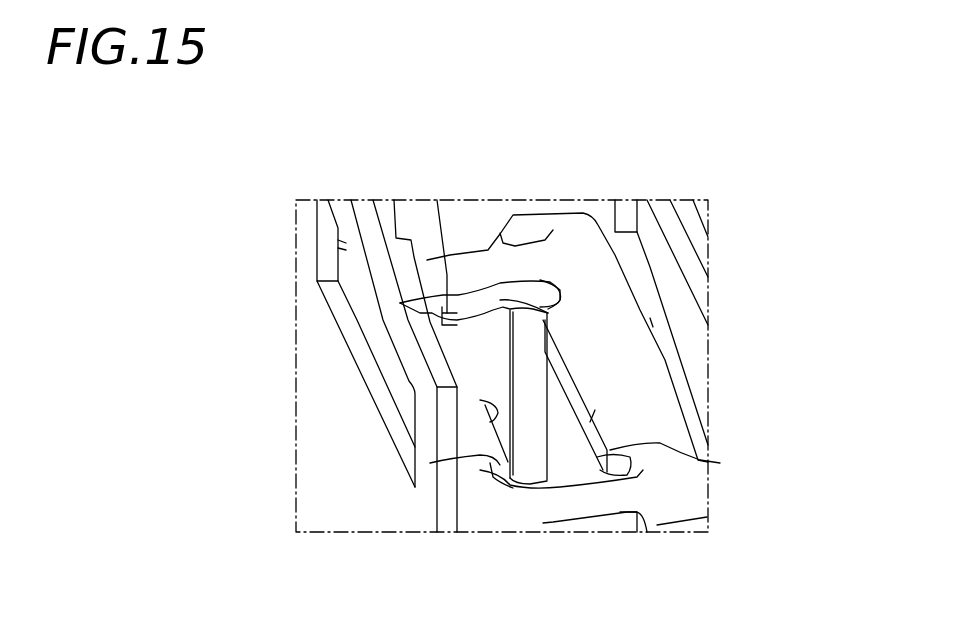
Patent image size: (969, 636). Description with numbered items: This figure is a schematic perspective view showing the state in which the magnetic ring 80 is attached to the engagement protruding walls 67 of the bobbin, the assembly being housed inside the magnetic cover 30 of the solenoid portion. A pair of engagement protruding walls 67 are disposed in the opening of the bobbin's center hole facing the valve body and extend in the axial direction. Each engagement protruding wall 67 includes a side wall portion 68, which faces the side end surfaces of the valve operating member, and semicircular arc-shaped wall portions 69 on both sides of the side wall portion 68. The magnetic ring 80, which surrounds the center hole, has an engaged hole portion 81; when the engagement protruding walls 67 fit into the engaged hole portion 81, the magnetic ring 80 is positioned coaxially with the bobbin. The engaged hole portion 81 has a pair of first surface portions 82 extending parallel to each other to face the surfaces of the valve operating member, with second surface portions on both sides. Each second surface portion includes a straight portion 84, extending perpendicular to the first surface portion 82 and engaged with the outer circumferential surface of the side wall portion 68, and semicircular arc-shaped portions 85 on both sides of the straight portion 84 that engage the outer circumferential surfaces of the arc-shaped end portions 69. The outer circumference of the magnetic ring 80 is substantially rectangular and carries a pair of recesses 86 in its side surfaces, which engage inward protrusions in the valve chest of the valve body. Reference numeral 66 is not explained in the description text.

The magnetic cover 30 is at (340, 395).
The groove 66 is at (481, 265).
The engagement protruding wall 67 is at (470, 303).
The side wall portion 68 is at (432, 255).
The semicircular arc-shaped wall portion 69 is at (550, 310).
The magnetic ring 80 is at (627, 330).
The engaged hole portion 81 is at (585, 377).
The first surface portion 82 is at (597, 420).
The straight portion 84 is at (540, 255).
The semicircular arc-shaped portion 85 is at (553, 300).
The recess 86 is at (462, 300).